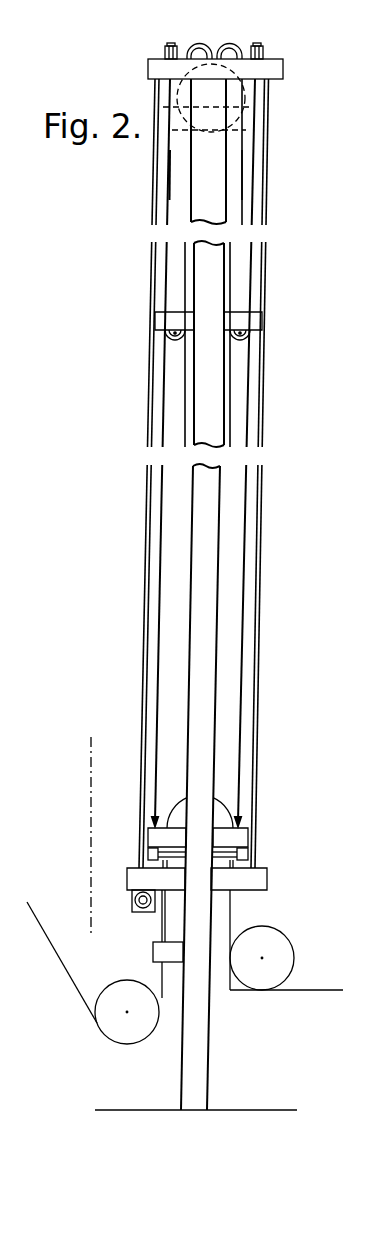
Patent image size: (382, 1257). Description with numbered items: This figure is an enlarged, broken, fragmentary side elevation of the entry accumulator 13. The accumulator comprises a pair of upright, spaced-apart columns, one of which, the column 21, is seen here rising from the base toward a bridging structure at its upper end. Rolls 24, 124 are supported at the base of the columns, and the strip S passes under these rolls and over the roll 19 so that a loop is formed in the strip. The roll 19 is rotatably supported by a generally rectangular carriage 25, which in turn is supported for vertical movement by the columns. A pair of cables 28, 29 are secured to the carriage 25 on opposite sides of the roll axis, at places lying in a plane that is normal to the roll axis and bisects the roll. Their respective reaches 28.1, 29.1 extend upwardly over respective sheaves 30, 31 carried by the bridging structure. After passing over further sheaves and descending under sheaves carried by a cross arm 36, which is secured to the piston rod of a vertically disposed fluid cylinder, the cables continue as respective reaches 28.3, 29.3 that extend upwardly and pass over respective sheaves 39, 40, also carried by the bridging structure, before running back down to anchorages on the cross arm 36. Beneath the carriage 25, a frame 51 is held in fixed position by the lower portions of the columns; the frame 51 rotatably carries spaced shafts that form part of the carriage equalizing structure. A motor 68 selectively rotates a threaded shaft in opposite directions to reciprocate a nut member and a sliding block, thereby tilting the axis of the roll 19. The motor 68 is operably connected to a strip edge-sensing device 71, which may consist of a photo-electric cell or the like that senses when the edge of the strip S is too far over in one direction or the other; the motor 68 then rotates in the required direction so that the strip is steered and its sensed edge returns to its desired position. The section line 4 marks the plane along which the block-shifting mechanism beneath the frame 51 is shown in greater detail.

The entry accumulator 13 is at (201, 473).
The roll 19 is at (220, 812).
The column 21 is at (205, 1042).
The roll 24 is at (113, 1030).
The carriage 25 is at (237, 840).
The cable 28 is at (245, 660).
The cable reach 28.1 is at (245, 560).
The cable reach 28.3 is at (237, 178).
The cable 29 is at (158, 615).
The cable reach 29.1 is at (162, 537).
The cable reach 29.3 is at (190, 173).
The sheave 30 is at (260, 42).
The sheave 31 is at (167, 42).
The cross arm 36 is at (238, 322).
The sheave 39 is at (230, 42).
The sheave 40 is at (195, 42).
The frame 51 is at (268, 877).
The motor 68 is at (137, 910).
The strip edge-sensing device 71 is at (155, 957).
The roll 124 is at (282, 948).
The strip S is at (73, 987).
The section line 4- 4 is at (117, 762).